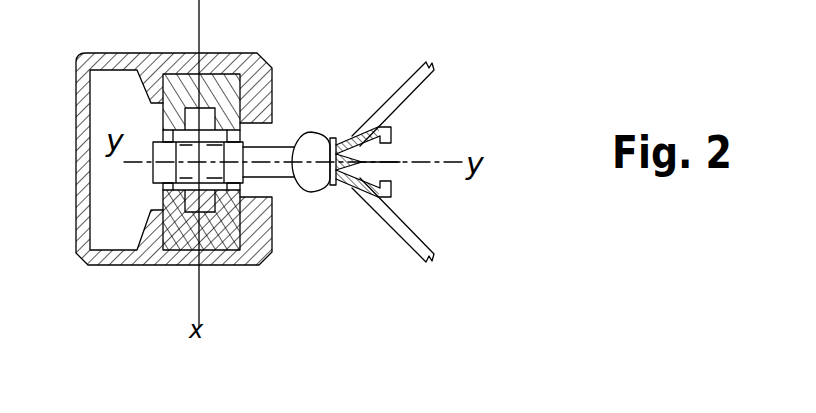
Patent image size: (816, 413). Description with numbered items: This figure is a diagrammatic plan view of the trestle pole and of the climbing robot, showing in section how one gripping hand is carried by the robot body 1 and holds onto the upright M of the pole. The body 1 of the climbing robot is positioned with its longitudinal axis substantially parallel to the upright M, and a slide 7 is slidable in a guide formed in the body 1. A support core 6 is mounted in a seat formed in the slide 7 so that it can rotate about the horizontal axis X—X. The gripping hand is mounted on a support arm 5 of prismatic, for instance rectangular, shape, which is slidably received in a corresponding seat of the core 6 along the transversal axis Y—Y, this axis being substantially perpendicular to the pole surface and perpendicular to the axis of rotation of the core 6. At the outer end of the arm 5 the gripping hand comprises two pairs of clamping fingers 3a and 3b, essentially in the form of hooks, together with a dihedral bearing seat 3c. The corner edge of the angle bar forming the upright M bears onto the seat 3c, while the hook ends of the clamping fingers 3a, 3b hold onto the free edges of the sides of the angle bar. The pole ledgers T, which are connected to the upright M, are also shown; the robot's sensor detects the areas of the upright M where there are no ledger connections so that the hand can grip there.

The body 1 is at (78, 56).
The slide 7 is at (240, 53).
The support arm 5 is at (268, 150).
The support core 6 is at (222, 186).
The clamping fingers 3a is at (398, 130).
The clamping fingers 3b is at (392, 192).
The dihedral bearing seat 3c is at (335, 186).
The pole ledgers T is at (408, 70).
The upright M is at (400, 162).